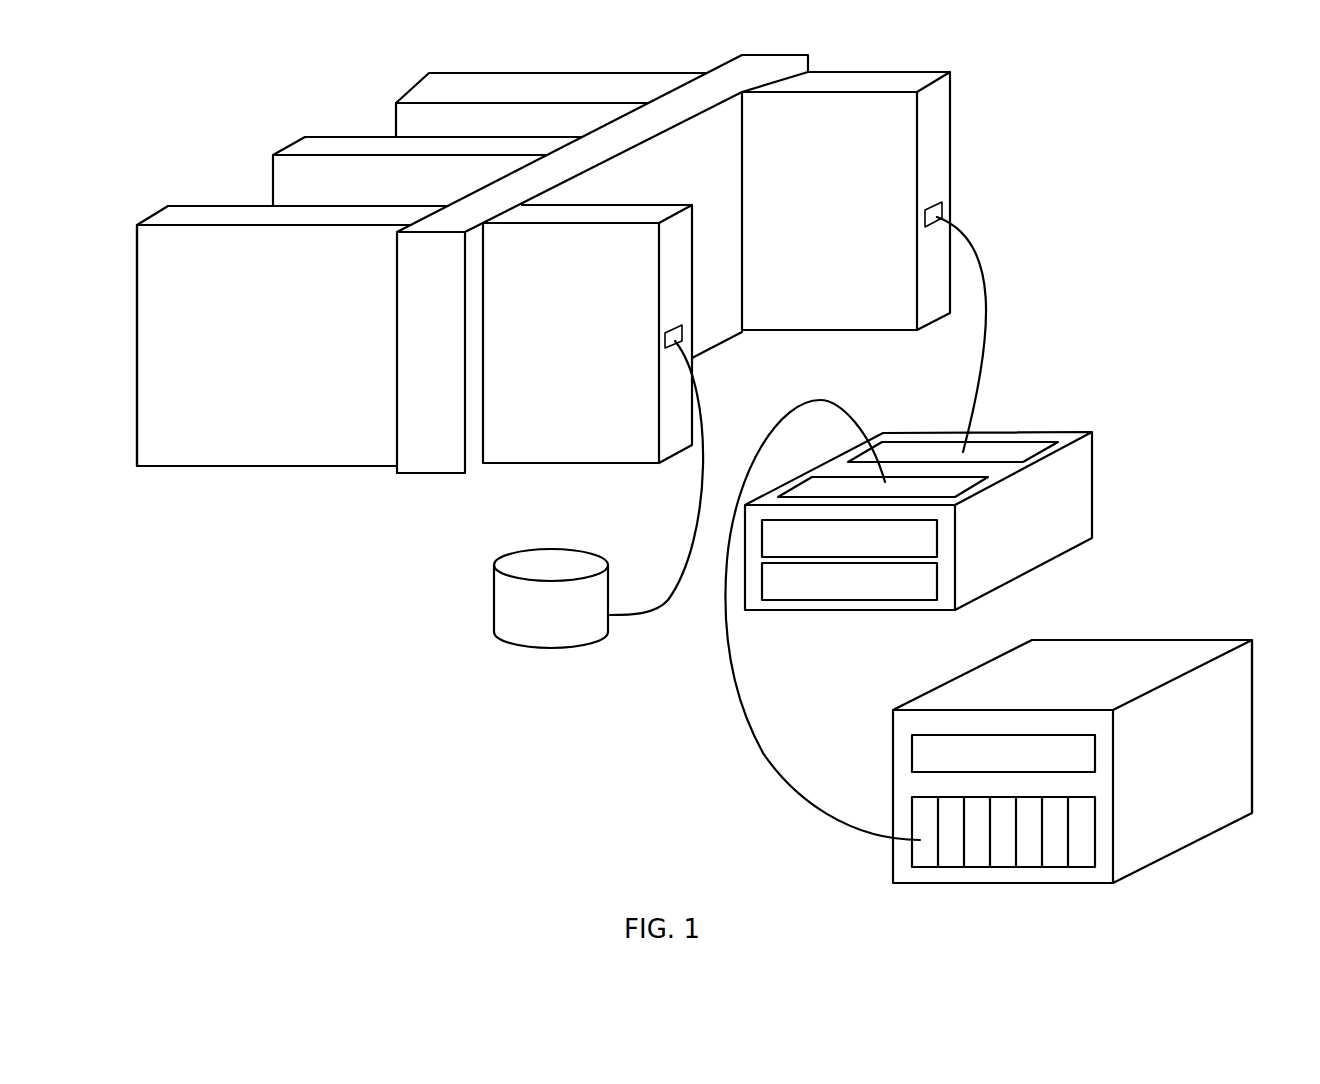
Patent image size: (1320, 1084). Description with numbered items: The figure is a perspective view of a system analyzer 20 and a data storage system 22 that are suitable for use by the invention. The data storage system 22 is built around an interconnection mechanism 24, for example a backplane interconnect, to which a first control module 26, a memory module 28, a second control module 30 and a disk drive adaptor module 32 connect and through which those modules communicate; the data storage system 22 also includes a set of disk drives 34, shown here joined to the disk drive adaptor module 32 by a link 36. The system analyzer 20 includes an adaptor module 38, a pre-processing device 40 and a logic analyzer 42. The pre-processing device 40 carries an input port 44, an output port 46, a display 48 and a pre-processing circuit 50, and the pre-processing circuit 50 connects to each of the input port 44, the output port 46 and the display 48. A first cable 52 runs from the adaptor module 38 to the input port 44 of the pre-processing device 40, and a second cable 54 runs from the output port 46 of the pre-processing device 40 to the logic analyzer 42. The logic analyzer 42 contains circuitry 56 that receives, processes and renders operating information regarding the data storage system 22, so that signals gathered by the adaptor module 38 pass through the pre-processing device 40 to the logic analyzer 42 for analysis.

The system analyzer 20 is at (1247, 113).
The data storage system 22 is at (143, 113).
The interconnection mechanism 24 is at (467, 473).
The first control module 26 is at (397, 103).
The memory module 28 is at (273, 157).
The second control module 30 is at (138, 245).
The disk drive adaptor module 32 is at (560, 464).
The set of disk drives 34 is at (540, 622).
The communication link 36 is at (683, 563).
The adaptor module 38 is at (952, 112).
The pre-processing device 40 is at (1093, 510).
The logic analyzer 42 is at (1200, 840).
The input port 44 is at (1013, 452).
The output port 46 is at (955, 487).
The display 48 is at (927, 547).
The pre-processing circuit 50 is at (927, 581).
The first cable 52 is at (990, 332).
The second cable 54 is at (728, 687).
The circuitry 56 is at (1095, 750).